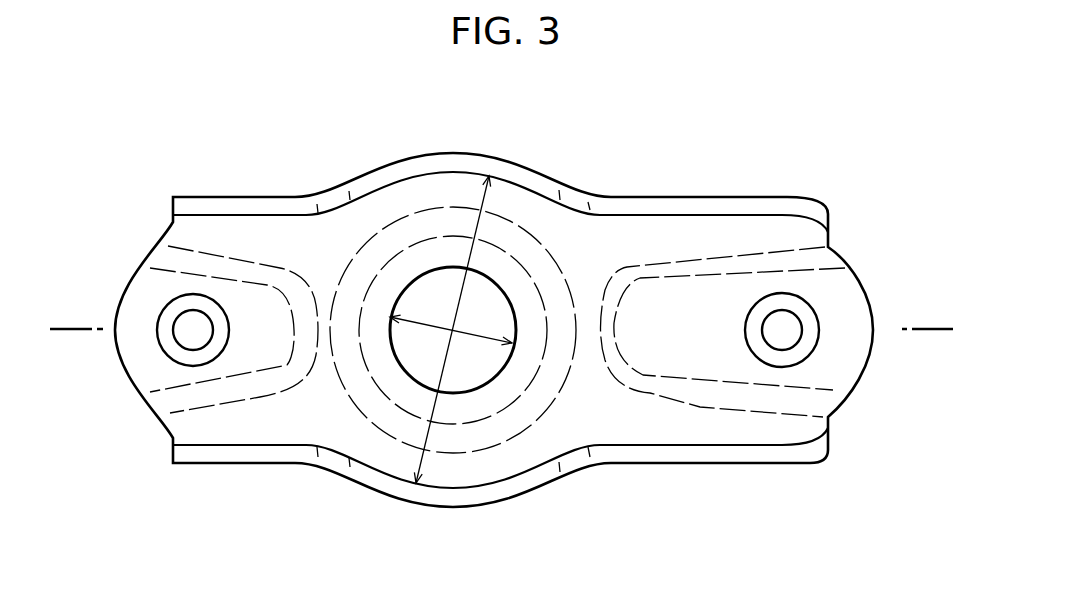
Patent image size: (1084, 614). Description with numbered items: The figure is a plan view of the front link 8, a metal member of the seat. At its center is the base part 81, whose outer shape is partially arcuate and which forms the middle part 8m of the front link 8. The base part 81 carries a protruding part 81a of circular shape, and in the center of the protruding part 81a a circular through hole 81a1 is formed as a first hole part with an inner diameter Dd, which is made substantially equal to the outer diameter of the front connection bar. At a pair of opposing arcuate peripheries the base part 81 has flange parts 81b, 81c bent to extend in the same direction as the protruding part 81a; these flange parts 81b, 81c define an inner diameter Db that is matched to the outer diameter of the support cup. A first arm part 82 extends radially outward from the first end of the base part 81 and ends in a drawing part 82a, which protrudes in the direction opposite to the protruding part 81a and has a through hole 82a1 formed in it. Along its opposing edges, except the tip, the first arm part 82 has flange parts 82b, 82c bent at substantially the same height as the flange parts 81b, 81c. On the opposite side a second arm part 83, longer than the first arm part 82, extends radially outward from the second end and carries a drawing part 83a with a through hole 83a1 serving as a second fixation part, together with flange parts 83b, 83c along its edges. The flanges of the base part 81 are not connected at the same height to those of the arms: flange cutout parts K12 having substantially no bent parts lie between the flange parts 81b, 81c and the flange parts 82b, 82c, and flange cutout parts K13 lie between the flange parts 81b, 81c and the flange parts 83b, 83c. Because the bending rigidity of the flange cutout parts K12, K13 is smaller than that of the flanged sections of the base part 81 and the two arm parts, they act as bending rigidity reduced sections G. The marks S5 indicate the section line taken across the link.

The front link 8 is at (555, 183).
The base part 81 is at (401, 164).
The protruding part 81a is at (450, 253).
The through hole 81a1 is at (400, 378).
The flange part 81b is at (417, 157).
The flange part 81c is at (485, 508).
The first arm part 82 is at (202, 197).
The drawing part 82a is at (137, 313).
The through hole 82a1 is at (174, 333).
The flange part 82b is at (223, 196).
The flange part 82c is at (228, 465).
The second arm part 83 is at (790, 196).
The drawing part 83a is at (850, 325).
The through hole 83a1 is at (795, 312).
The flange part 83b is at (732, 196).
The flange part 83c is at (737, 464).
The flange cutout part K12 is at (331, 186).
The flange cutout part K13 is at (577, 186).
The bending rigidity reduced section G is at (290, 78).
The middle part 8m is at (349, 73).
The inner diameter Db is at (510, 200).
The inner diameter Dd is at (514, 325).
The section line S5 is at (72, 332).